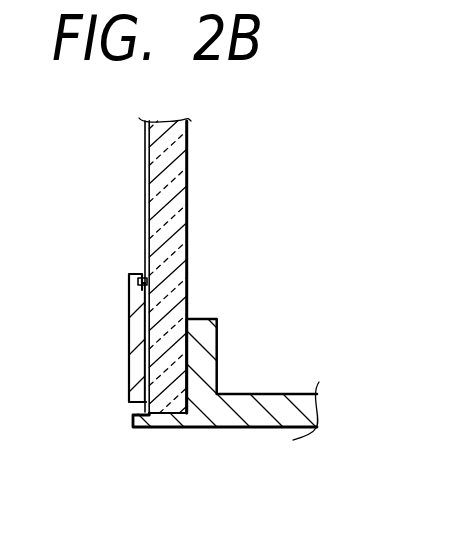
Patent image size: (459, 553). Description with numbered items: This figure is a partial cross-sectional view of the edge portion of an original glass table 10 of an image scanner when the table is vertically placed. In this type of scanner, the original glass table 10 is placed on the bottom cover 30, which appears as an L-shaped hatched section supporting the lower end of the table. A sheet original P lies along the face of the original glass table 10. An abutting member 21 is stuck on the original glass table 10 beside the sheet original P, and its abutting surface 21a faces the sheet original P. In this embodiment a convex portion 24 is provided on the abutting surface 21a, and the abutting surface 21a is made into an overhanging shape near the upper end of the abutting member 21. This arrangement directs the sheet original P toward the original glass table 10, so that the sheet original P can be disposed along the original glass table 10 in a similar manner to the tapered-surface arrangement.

The original glass table 10 is at (187, 232).
The sheet original P is at (145, 175).
The abutting member 21 is at (129, 297).
The abutting surface 21a is at (142, 287).
The convex portion 24 is at (134, 275).
The bottom cover 30 is at (293, 420).